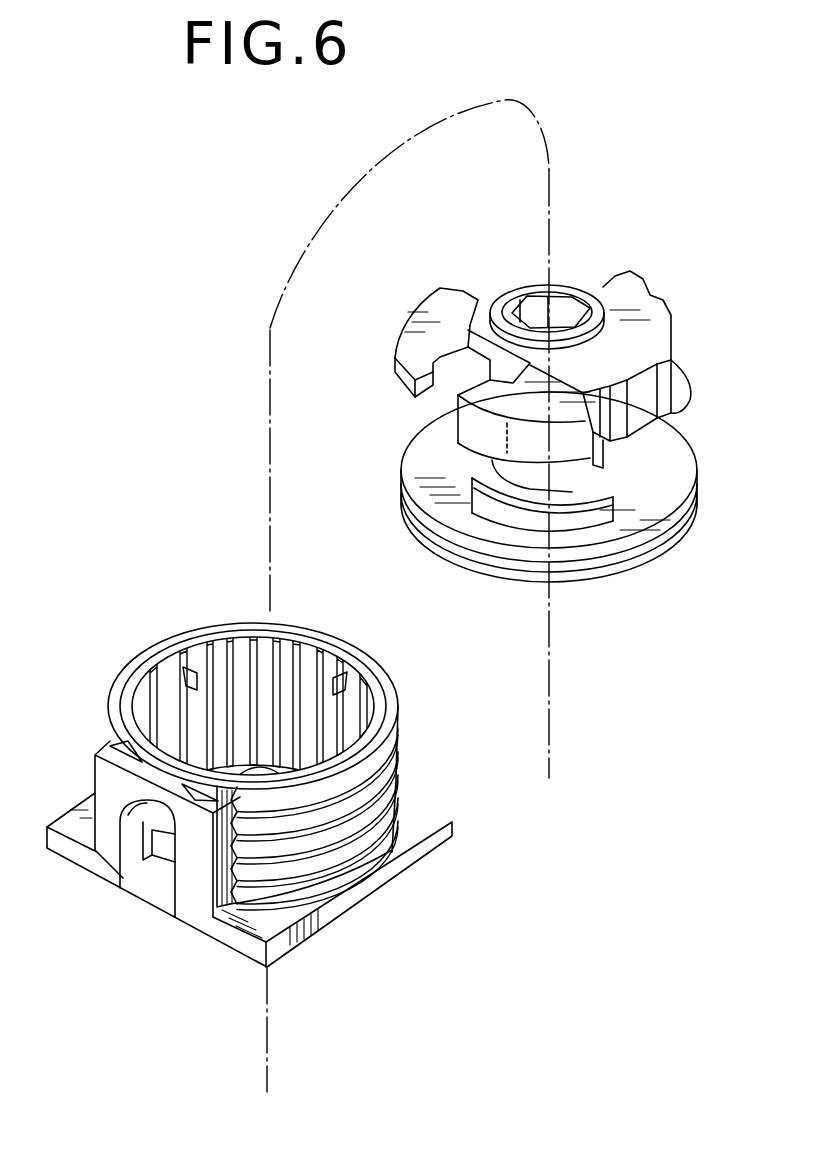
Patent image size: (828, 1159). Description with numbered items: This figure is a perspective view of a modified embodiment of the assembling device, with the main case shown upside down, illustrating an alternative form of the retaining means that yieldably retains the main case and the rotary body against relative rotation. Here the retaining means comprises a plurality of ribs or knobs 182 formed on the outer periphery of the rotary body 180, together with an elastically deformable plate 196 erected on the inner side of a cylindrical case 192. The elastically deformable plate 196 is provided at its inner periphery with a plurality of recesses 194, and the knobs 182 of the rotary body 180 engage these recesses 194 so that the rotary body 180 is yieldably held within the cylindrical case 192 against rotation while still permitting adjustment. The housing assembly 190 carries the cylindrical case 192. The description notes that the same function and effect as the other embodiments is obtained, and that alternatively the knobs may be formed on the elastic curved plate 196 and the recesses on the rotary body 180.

The rotary body 180 is at (551, 268).
The ribs or knobs 182 is at (668, 480).
The housing 190 is at (446, 776).
The cylindrical case 192 is at (392, 738).
The recesses 194 is at (300, 686).
The elastically deformable plate 196 is at (313, 700).